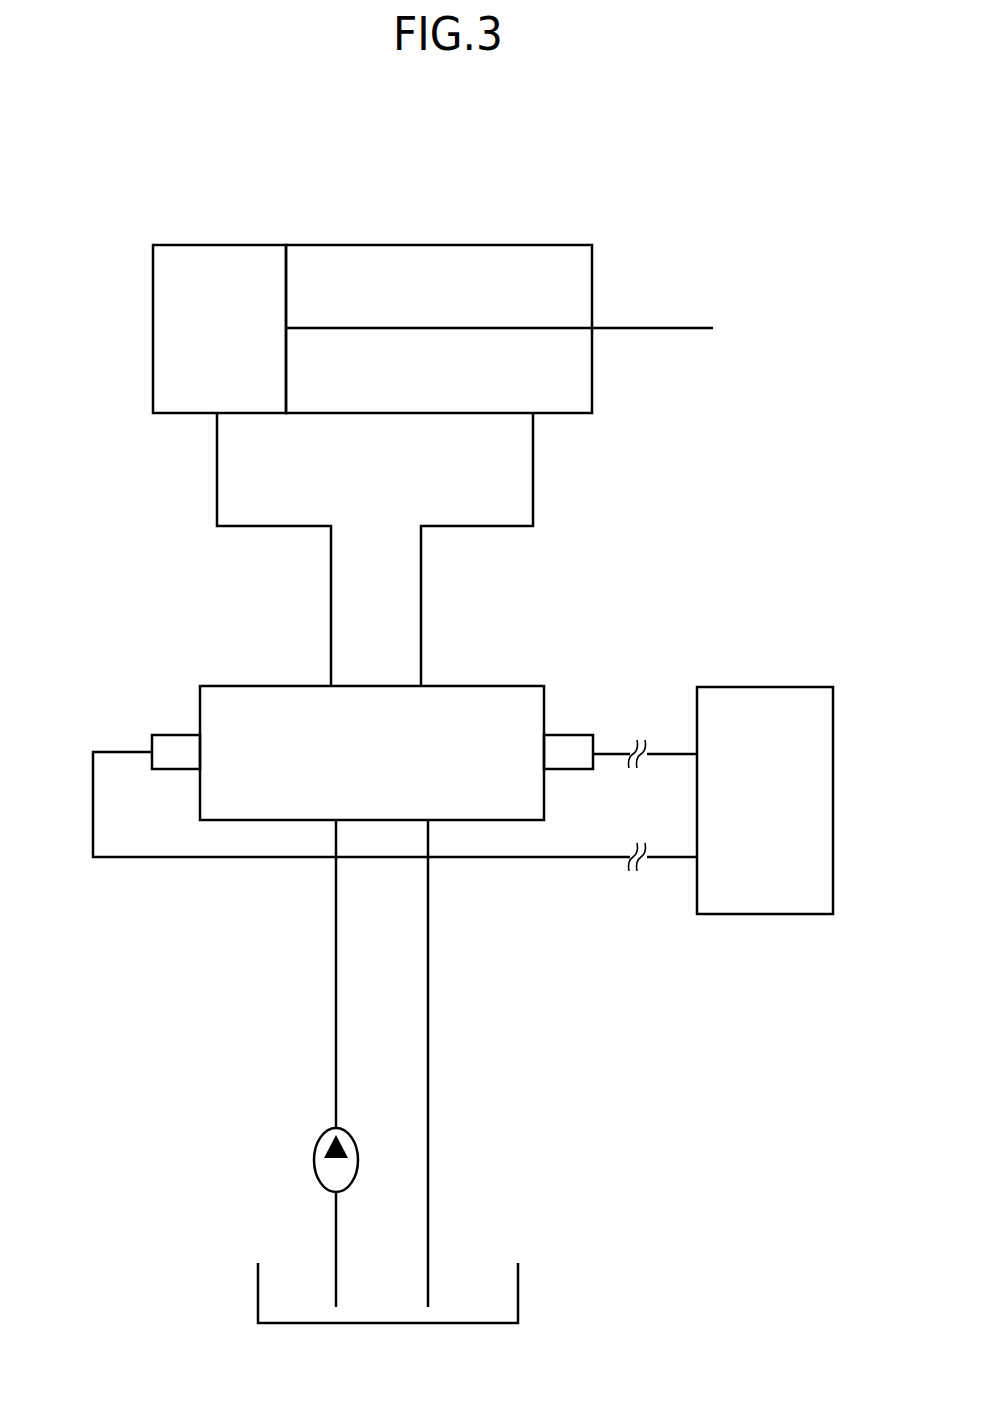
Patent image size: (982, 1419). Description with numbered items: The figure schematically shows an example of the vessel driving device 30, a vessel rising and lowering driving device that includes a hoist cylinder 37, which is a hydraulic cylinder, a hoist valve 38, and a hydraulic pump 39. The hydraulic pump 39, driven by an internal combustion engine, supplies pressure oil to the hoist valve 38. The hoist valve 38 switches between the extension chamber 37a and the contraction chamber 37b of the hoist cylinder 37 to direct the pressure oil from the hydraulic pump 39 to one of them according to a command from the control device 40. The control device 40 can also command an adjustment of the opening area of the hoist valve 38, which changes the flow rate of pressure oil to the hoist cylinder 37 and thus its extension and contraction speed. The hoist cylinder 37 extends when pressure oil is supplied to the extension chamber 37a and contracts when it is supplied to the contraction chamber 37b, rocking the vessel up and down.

The vessel driving device 30 is at (575, 168).
The hoist cylinder 37 is at (305, 240).
The extension chamber 37a is at (180, 321).
The contraction chamber 37b is at (493, 270).
The hoist valve 38 is at (186, 718).
The hydraulic pump 39 is at (314, 1153).
The control device 40 is at (770, 914).